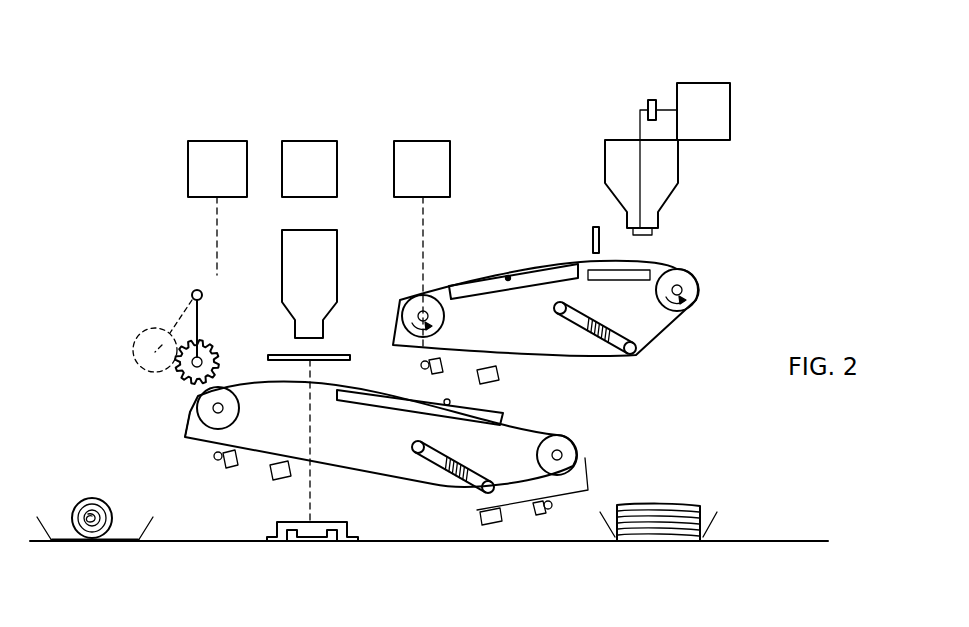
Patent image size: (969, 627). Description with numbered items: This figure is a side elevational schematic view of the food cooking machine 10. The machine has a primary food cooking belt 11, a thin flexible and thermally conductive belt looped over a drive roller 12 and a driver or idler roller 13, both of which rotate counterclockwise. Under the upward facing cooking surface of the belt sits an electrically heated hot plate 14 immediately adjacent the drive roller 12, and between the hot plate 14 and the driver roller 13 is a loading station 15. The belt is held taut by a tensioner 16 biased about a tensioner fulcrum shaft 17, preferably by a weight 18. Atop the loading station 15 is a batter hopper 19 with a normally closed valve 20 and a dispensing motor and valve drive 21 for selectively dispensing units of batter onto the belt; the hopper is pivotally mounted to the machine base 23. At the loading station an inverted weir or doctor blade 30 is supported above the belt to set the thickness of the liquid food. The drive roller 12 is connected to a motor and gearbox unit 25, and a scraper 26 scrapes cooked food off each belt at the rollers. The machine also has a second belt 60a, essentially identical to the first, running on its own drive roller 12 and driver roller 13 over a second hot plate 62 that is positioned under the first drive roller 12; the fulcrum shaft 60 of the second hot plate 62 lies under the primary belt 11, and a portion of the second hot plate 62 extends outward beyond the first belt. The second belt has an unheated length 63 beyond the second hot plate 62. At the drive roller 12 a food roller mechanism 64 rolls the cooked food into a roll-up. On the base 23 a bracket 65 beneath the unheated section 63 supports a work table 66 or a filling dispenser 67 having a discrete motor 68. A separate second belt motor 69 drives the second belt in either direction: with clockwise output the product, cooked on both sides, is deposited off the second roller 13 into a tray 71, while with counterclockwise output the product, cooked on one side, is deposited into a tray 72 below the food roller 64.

The food cooking machine 10 is at (617, 553).
The primary food cooking belt 11 is at (455, 288).
The drive roller 12 is at (445, 316).
The driver or idler roller 13 is at (698, 278).
The hot plate 14 is at (532, 268).
The loading station 15 is at (697, 246).
The tensioner 16 is at (638, 341).
The tensioner fulcrum shaft 17 is at (558, 316).
The weight 18 is at (606, 345).
The batter hopper 19 is at (605, 160).
The normally closed valve 20 is at (640, 226).
The dispensing motor and valve drive 21 is at (731, 93).
The machine base 23 is at (748, 538).
The motor and gearbox unit 25 is at (443, 141).
The scraper 26 is at (393, 340).
The doctor blade 30 is at (590, 240).
The fulcrum shaft 60 is at (507, 276).
The second belt 60a is at (333, 470).
The second hot plate 62 is at (468, 414).
The unheated length 63 is at (327, 385).
The food roller mechanism 64 is at (137, 340).
The bracket 65 is at (272, 529).
The work table 66 is at (278, 355).
The filling dispenser 67 is at (331, 228).
The discrete motor 68 is at (314, 141).
The second belt motor 69 is at (220, 141).
The tray 71 is at (704, 508).
The tray 72 is at (132, 535).